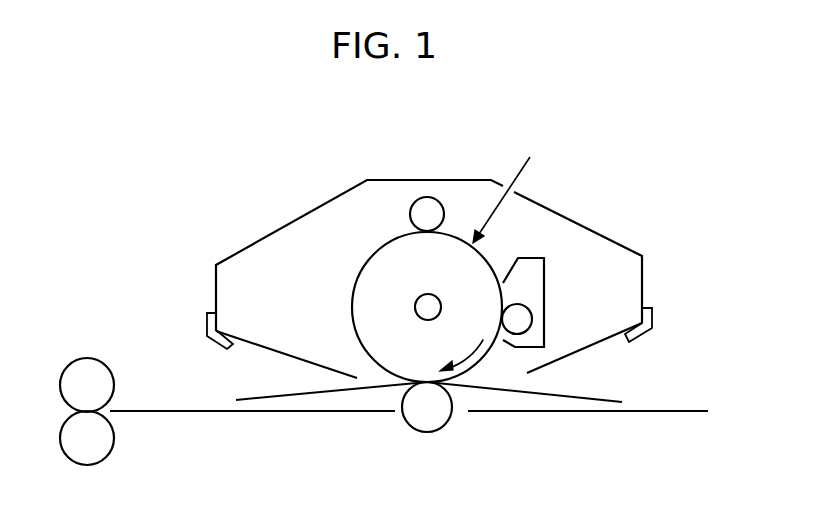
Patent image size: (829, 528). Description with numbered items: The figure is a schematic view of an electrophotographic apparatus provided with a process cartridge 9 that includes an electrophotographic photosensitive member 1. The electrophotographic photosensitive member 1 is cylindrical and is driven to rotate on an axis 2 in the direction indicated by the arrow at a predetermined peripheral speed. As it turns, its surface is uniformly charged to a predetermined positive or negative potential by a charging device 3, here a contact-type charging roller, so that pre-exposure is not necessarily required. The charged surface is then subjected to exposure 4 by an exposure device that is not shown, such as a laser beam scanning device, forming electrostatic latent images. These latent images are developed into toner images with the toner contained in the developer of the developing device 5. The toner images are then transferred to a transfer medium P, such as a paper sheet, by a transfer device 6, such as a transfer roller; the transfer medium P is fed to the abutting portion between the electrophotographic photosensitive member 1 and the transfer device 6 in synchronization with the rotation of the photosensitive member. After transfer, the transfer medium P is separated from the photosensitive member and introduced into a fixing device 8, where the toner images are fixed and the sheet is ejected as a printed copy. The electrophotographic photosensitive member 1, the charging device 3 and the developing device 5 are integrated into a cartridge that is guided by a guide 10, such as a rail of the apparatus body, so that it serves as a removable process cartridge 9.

The electrophotographic photosensitive member 1 is at (362, 268).
The axis 2 is at (430, 295).
The charging device 3 is at (428, 197).
The exposure 4 is at (516, 180).
The developing device 5 is at (530, 258).
The transfer device 6 is at (427, 432).
The fixing device 8 is at (87, 358).
The process cartridge 9 is at (580, 217).
The guide 10 is at (206, 320).
The transfer medium P is at (572, 395).